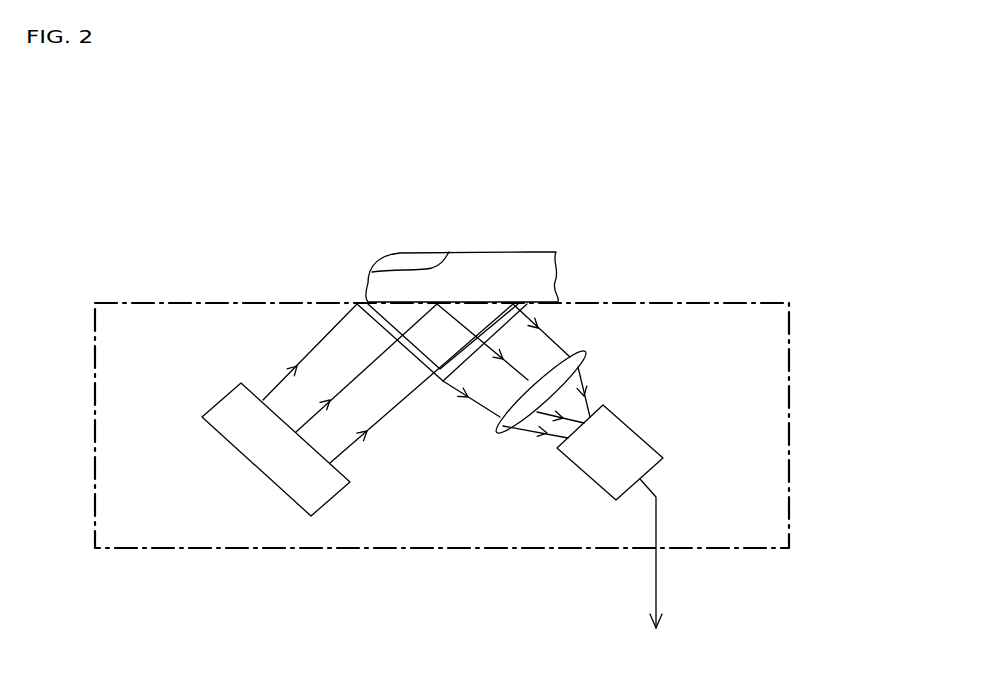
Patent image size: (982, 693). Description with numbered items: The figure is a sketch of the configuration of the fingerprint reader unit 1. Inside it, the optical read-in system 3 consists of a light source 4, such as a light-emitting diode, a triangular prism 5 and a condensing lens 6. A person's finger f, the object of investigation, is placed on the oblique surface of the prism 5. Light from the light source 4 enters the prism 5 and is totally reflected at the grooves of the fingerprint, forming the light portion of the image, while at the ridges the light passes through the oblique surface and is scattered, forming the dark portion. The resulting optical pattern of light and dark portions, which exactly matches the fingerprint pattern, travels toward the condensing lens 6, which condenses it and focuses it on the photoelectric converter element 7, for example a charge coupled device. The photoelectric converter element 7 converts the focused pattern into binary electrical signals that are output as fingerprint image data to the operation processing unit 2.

The fingerprint reader unit 1 is at (792, 380).
The operation processing unit 2 is at (757, 575).
The optical read-in system 3 is at (397, 481).
The light source 4 is at (323, 487).
The triangular prism 5 is at (423, 358).
The condensing lens 6 is at (541, 478).
The photoelectric converter element 7 is at (633, 452).
The finger f is at (502, 267).